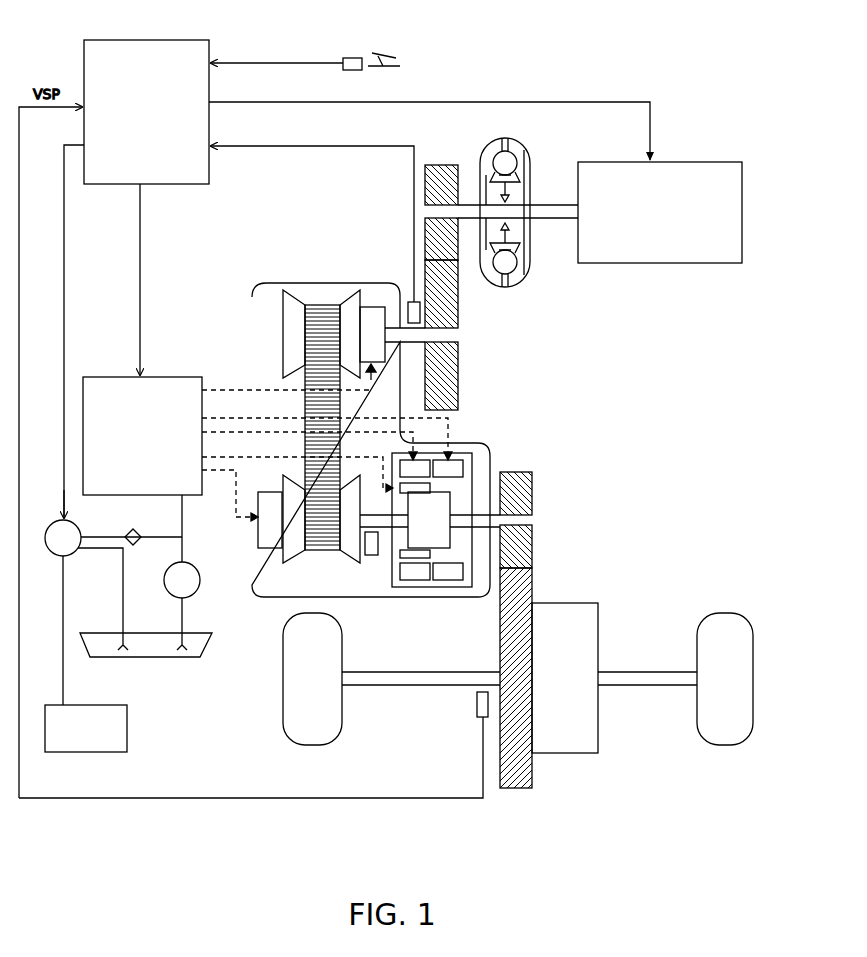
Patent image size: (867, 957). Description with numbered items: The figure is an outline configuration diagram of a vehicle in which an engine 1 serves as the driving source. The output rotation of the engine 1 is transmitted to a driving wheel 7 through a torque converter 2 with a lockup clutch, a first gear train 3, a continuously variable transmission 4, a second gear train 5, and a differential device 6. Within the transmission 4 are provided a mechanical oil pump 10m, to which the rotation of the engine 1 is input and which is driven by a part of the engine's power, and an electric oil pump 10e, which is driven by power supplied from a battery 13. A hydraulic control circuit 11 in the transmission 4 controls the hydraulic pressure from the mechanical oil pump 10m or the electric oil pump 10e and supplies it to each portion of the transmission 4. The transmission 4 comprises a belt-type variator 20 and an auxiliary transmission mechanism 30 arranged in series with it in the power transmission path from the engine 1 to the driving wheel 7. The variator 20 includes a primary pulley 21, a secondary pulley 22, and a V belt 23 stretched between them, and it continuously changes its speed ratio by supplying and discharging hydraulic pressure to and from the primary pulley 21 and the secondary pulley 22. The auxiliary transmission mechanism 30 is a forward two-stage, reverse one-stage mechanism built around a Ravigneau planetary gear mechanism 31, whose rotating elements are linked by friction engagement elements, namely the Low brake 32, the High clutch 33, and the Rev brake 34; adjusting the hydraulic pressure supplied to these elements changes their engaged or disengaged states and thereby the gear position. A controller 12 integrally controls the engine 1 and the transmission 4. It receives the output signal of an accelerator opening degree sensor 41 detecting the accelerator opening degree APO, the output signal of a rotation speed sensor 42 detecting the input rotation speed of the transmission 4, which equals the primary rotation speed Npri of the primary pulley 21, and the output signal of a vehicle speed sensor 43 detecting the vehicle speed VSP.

The engine 1 is at (718, 172).
The torque converter 2 is at (520, 165).
The first gear train 3 is at (432, 162).
The transmission 4 is at (391, 284).
The second gear train 5 is at (515, 796).
The differential device 6 is at (568, 752).
The driving wheel 7 is at (312, 735).
The electric oil pump 10e is at (68, 553).
The mechanical oil pump 10m is at (176, 598).
The hydraulic control circuit 11 is at (100, 380).
The controller 12 is at (124, 40).
The battery 13 is at (118, 740).
The variator 20 is at (272, 310).
The primary pulley 21 is at (276, 332).
The secondary pulley 22 is at (322, 565).
The V belt 23 is at (322, 305).
The auxiliary transmission mechanism 30 is at (473, 458).
The Ravigneau planetary gear mechanism 31 is at (430, 520).
The Low brake 32 is at (418, 470).
The High clutch 33 is at (418, 556).
The Rev brake 34 is at (448, 470).
The accelerator opening degree sensor 41 is at (353, 70).
The rotation speed sensor 42 is at (413, 300).
The vehicle speed sensor 43 is at (477, 707).